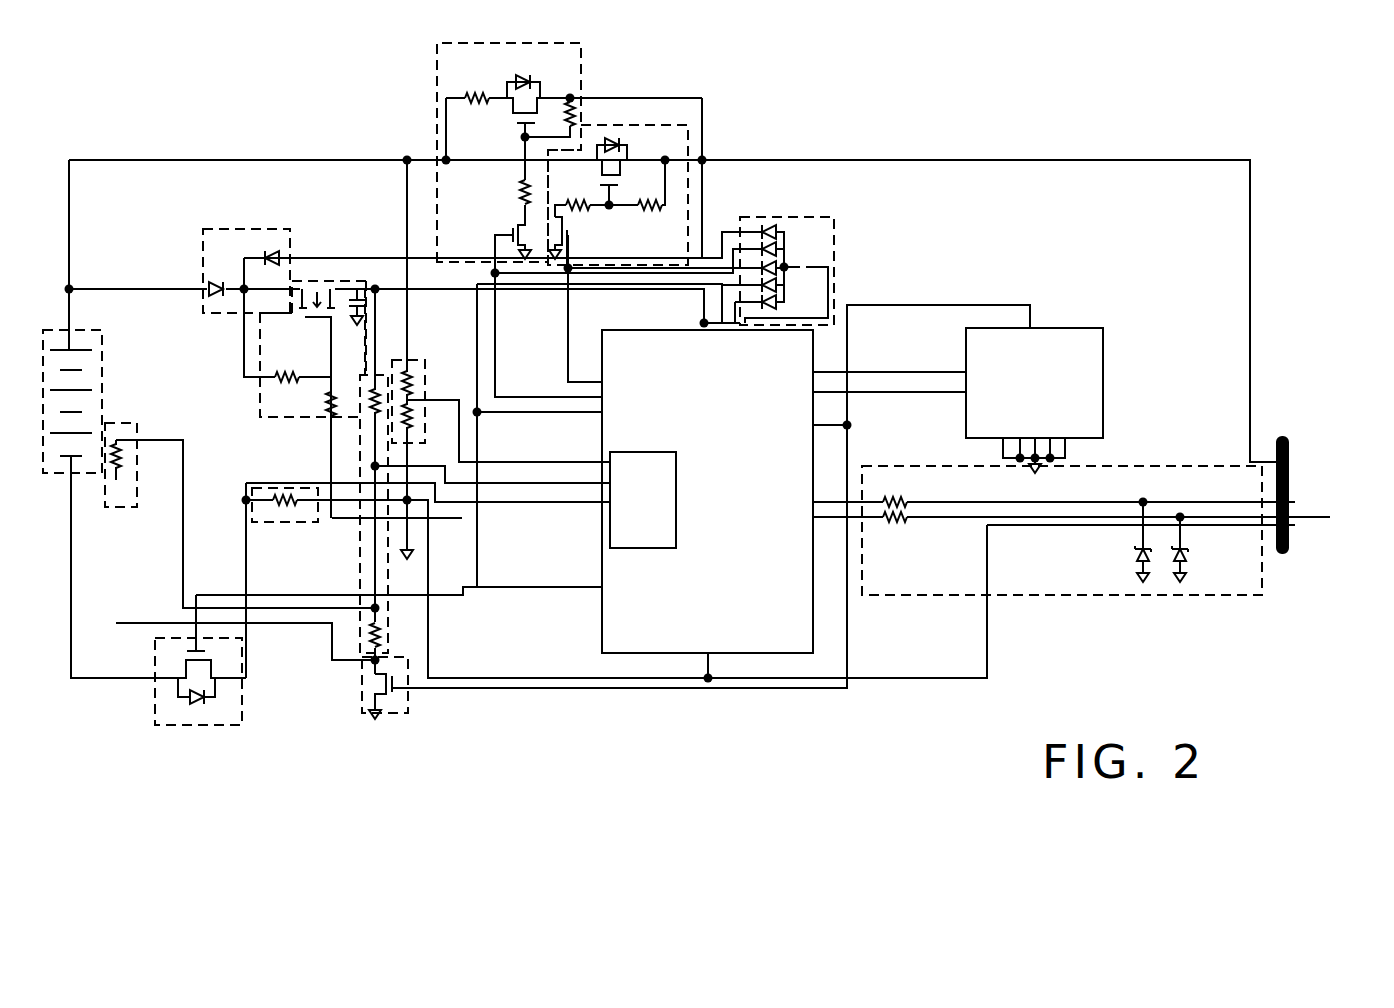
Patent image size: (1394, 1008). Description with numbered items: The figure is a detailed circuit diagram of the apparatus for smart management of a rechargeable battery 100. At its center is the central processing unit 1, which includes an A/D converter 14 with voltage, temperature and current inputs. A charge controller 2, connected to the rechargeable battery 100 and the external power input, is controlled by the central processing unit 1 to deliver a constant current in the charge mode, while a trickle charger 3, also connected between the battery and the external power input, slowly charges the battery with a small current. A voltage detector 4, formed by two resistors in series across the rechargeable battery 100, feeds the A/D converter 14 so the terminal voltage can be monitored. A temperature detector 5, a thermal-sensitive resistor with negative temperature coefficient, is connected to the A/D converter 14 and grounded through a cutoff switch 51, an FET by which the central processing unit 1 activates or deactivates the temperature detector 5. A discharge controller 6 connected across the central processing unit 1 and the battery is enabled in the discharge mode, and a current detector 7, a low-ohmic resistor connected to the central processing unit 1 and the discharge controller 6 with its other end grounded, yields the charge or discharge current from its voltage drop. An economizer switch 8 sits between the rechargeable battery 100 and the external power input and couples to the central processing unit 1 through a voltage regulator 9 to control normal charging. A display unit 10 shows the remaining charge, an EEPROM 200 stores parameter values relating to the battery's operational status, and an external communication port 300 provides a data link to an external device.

The central processing unit 1 is at (718, 491).
The charge controller 2 is at (688, 132).
The trickle charger 3 is at (583, 57).
The voltage detector 4 is at (426, 373).
The temperature detector 5 is at (130, 424).
The discharge controller 6 is at (242, 705).
The current detector 7 is at (264, 490).
The economizer switch 8 is at (263, 230).
The voltage regulator 9 is at (318, 282).
The display unit 10 is at (834, 226).
The A/D converter 14 is at (610, 528).
The cutoff switch 51 is at (400, 706).
The rechargeable battery 100 is at (100, 333).
The EEPROM 200 is at (1065, 330).
The external communication port 300 is at (1183, 468).